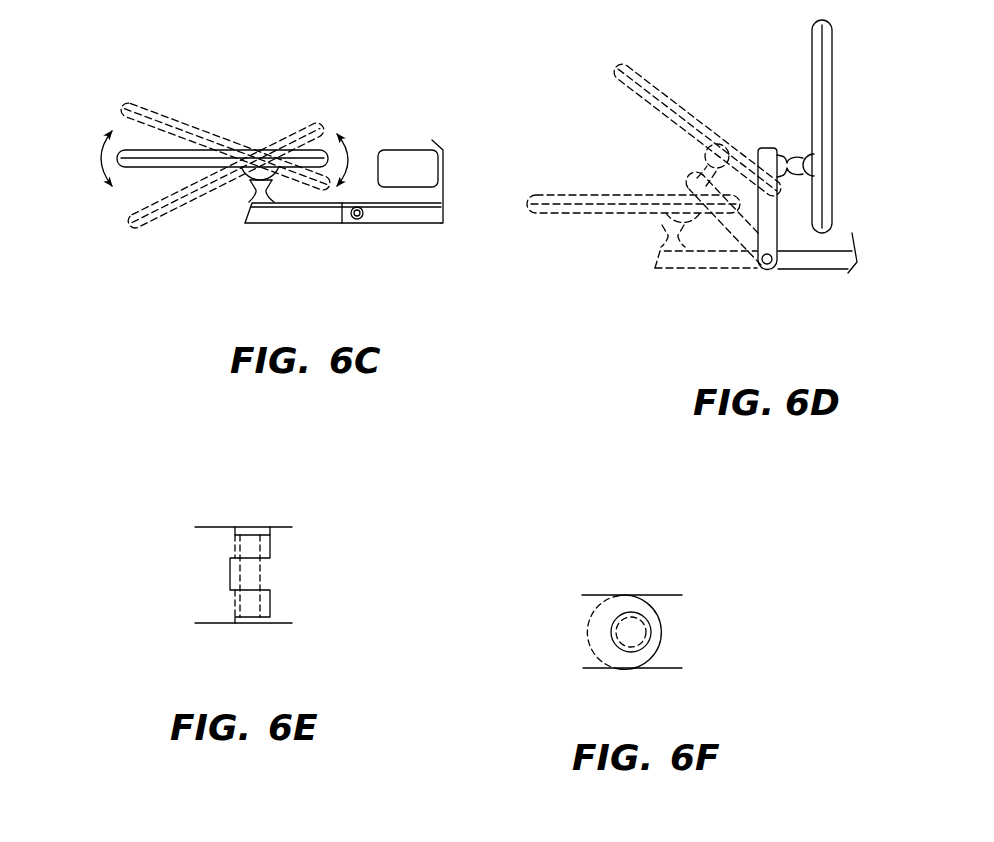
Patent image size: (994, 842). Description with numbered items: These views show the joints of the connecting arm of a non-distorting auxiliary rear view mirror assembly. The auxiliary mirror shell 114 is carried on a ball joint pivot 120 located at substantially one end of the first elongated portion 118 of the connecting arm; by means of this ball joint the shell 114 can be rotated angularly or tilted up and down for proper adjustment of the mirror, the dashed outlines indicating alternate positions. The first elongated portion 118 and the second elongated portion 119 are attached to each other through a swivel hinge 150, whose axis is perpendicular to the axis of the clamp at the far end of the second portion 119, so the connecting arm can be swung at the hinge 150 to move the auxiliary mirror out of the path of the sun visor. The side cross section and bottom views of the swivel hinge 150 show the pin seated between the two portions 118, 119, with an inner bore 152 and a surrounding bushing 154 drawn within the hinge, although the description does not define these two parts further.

In FIG. 6C, the auxiliary mirror shell 114 is at (134, 169).
In FIG. 6D, the auxiliary mirror shell 114 is at (811, 42).
In FIG. 6C, the first elongated portion 118 is at (286, 227).
In FIG. 6D, the first elongated portion 118 is at (756, 152).
In FIG. 6E, the first elongated portion 118 is at (207, 598).
In FIG. 6F, the first elongated portion 118 is at (594, 671).
In FIG. 6C, the second elongated portion 119 is at (425, 229).
In FIG. 6D, the second elongated portion 119 is at (838, 276).
In FIG. 6E, the second elongated portion 119 is at (284, 601).
In FIG. 6F, the second elongated portion 119 is at (669, 674).
In FIG. 6C, the ball joint pivot 120 is at (248, 189).
In FIG. 6D, the ball joint pivot 120 is at (807, 148).
In FIG. 6C, the swivel hinge 150 is at (357, 221).
In FIG. 6D, the swivel hinge 150 is at (760, 276).
In FIG. 6E, the swivel hinge 150 is at (246, 629).
In FIG. 6F, the swivel hinge 150 is at (632, 584).
In FIG. 6E, the bore 152 is at (243, 543).
In FIG. 6F, the bore 152 is at (638, 630).
In FIG. 6F, the bushing 154 is at (653, 643).